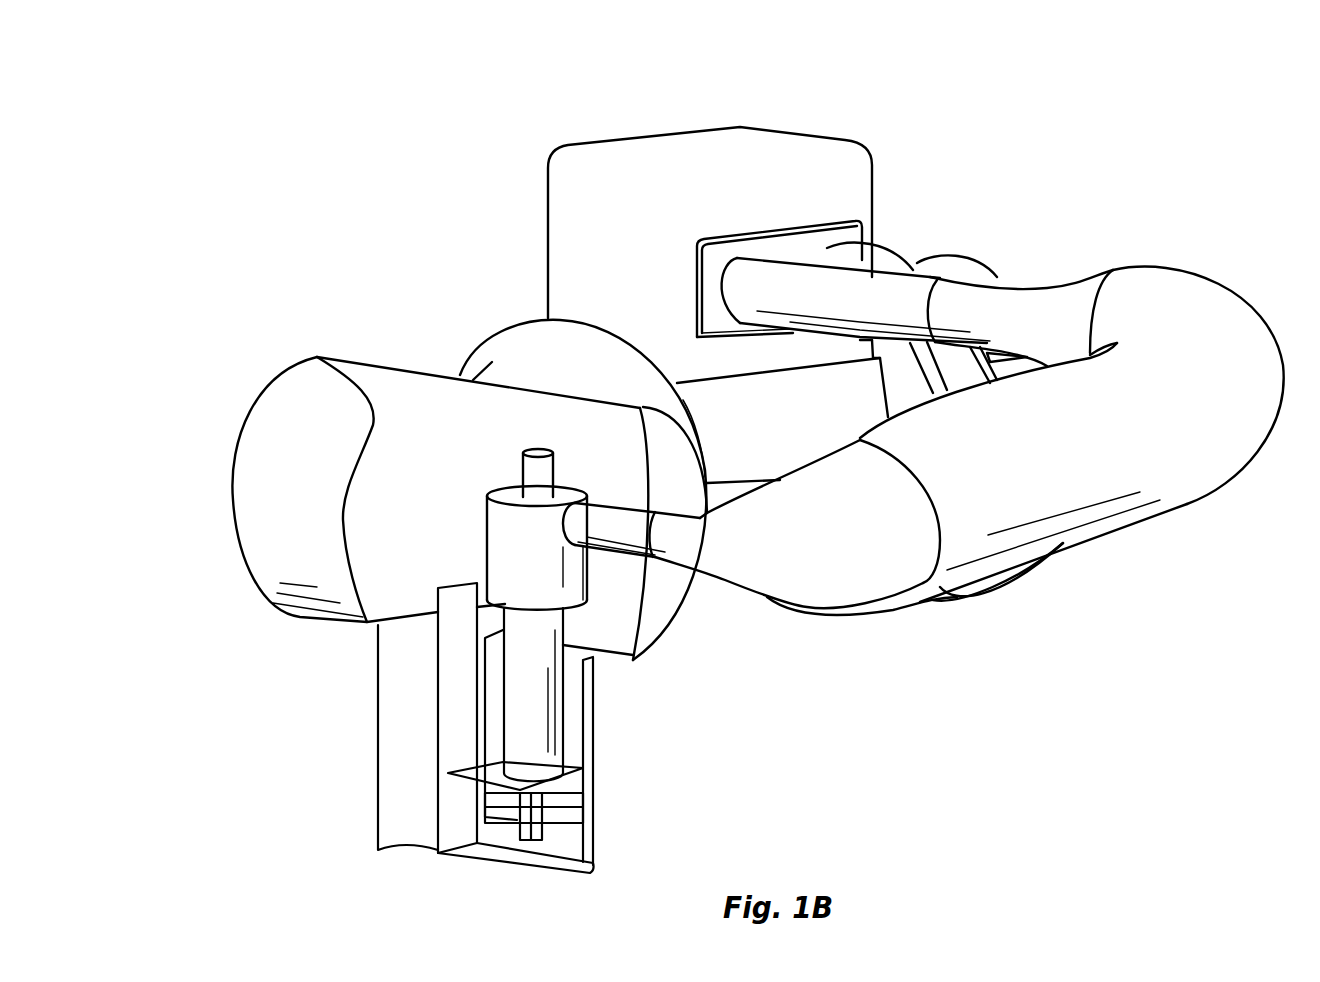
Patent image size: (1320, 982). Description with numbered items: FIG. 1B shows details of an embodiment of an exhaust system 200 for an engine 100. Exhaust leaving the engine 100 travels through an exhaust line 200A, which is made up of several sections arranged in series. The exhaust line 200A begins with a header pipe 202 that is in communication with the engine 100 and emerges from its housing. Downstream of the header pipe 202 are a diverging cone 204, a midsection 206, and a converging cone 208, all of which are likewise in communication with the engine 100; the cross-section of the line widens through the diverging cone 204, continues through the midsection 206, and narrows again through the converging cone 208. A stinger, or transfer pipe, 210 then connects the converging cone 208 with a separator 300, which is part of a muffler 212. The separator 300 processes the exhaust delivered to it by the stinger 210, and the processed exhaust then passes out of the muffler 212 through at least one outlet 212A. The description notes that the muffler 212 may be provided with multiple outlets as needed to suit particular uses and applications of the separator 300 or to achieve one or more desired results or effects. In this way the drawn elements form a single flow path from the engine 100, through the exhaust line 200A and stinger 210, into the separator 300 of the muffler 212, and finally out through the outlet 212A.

The engine 100 is at (754, 110).
The exhaust system 200 is at (723, 532).
The exhaust line 200A is at (1059, 223).
The header pipe 202 is at (838, 285).
The diverging cone 204 is at (1088, 272).
The midsection 206 is at (1185, 504).
The converging cone 208 is at (775, 582).
The stinger 210 is at (620, 532).
The muffler 212 is at (260, 387).
The outlet 212A is at (523, 867).
The separator 300 is at (483, 557).